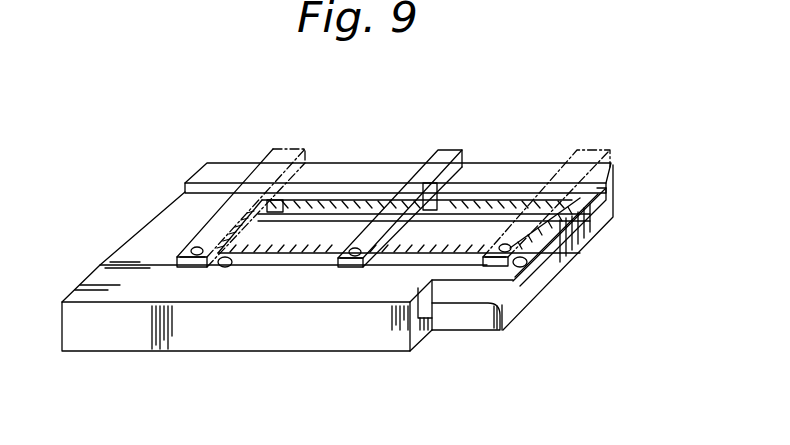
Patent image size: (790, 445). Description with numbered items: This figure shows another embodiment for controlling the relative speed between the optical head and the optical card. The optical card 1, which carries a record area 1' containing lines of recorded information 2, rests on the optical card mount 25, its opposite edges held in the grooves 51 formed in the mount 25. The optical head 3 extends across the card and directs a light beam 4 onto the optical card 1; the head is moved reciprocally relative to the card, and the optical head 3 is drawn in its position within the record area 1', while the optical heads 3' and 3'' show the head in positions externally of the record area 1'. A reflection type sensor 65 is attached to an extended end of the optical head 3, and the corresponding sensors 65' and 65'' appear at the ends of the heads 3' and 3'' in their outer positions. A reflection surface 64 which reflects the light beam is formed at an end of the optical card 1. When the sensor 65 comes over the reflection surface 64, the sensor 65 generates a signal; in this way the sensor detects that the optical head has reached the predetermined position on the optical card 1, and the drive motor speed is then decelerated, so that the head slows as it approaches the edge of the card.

The optical card 1 is at (467, 356).
The record area 1' is at (398, 168).
The lines of recorded information 2 is at (326, 222).
The optical head 3 is at (400, 175).
The optical head 3' is at (241, 175).
The optical head 3'' is at (546, 174).
The light beam 4 is at (447, 205).
The optical card mount 25 is at (290, 353).
The grooves 51 is at (604, 190).
The reflection surface 64 is at (224, 268).
The reflection type sensor 65 is at (337, 328).
The reflection type sensor 65' is at (161, 328).
The reflection type sensor 65'' is at (518, 326).